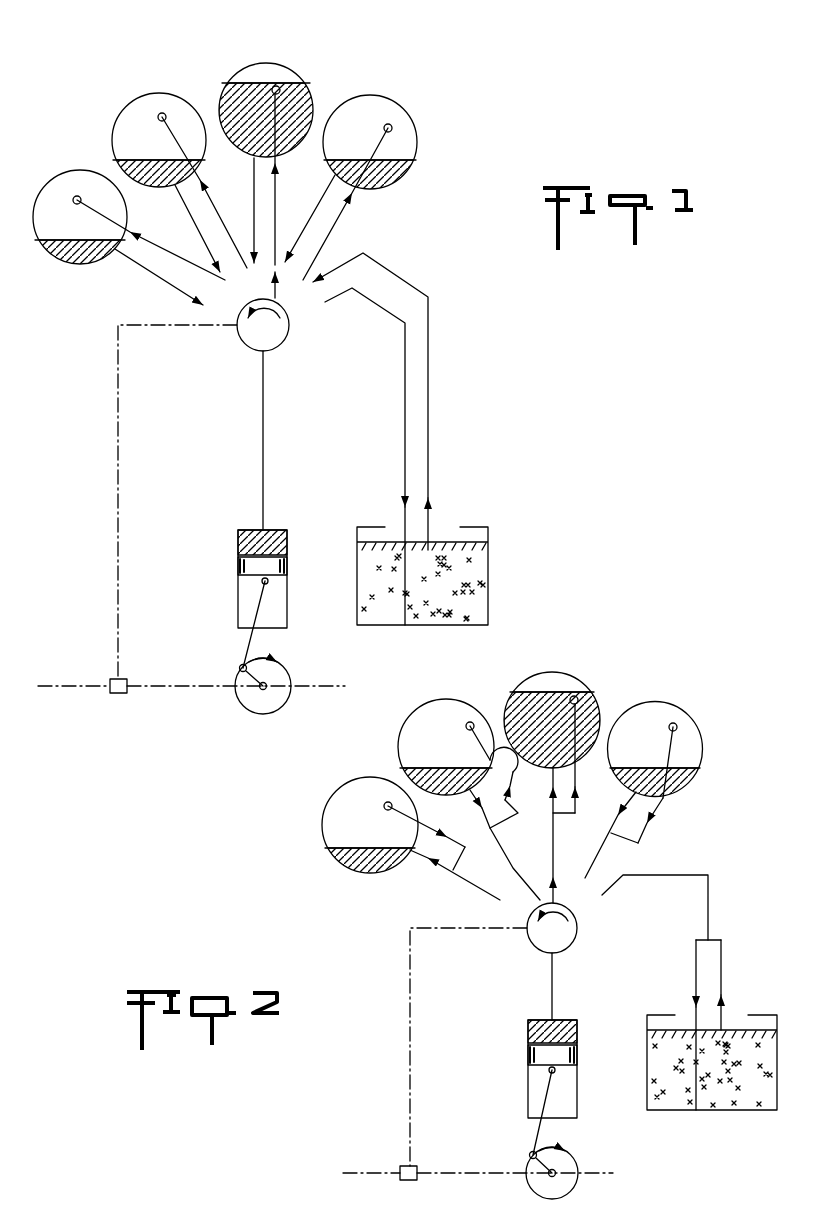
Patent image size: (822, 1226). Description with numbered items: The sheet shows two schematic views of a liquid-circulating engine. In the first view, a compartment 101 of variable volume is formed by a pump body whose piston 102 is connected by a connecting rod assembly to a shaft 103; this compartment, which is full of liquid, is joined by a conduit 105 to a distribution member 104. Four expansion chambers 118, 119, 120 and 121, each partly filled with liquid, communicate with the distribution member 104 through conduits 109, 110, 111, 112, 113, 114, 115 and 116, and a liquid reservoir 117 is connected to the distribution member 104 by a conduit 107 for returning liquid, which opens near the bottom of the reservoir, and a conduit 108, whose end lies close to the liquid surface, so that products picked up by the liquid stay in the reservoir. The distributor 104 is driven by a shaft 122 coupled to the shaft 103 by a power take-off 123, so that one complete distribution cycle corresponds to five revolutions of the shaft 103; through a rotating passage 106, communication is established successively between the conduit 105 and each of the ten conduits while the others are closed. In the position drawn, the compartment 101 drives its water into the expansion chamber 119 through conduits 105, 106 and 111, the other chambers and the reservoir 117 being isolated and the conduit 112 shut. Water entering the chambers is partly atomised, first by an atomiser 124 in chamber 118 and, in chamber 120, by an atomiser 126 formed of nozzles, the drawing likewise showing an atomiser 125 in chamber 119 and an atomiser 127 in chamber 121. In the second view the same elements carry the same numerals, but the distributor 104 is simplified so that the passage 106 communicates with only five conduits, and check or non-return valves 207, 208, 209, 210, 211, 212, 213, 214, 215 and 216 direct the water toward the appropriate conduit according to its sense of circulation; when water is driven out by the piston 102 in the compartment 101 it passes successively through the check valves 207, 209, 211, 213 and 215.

In FIG. 1, the compartment of variable volume 101 is at (284, 550).
In FIG. 2, the compartment of variable volume 101 is at (526, 1036).
In FIG. 1, the piston 102 is at (282, 570).
In FIG. 2, the piston 102 is at (530, 1057).
In FIG. 1, the shaft 103 is at (182, 686).
In FIG. 2, the shaft 103 is at (460, 1172).
In FIG. 1, the distribution member 104 is at (246, 345).
In FIG. 2, the distribution member 104 is at (572, 938).
In FIG. 1, the conduit 105 is at (270, 434).
In FIG. 2, the conduit 105 is at (556, 994).
In FIG. 1, the rotating passage 106 is at (272, 292).
In FIG. 2, the rotating passage 106 is at (551, 900).
In FIG. 1, the conduit 107 is at (333, 310).
In FIG. 2, the conduit 107 is at (604, 906).
In FIG. 1, the conduit 108 is at (350, 292).
In FIG. 1, the conduit 109 is at (326, 246).
In FIG. 2, the conduit 109 is at (592, 868).
In FIG. 1, the conduit 110 is at (342, 222).
In FIG. 1, the conduit 111 is at (262, 222).
In FIG. 2, the conduit 111 is at (556, 864).
In FIG. 1, the conduit 112 is at (272, 186).
In FIG. 1, the conduit 113 is at (205, 218).
In FIG. 2, the conduit 113 is at (507, 870).
In FIG. 1, the conduit 114 is at (196, 191).
In FIG. 1, the conduit 115 is at (164, 252).
In FIG. 2, the conduit 115 is at (482, 897).
In FIG. 1, the conduit 116 is at (146, 275).
In FIG. 1, the liquid reservoir 117 is at (478, 526).
In FIG. 2, the liquid reservoir 117 is at (650, 1025).
In FIG. 1, the expansion chamber 118 is at (418, 150).
In FIG. 2, the expansion chamber 118 is at (703, 740).
In FIG. 1, the expansion chamber 119 is at (306, 92).
In FIG. 2, the expansion chamber 119 is at (570, 672).
In FIG. 1, the expansion chamber 120 is at (192, 104).
In FIG. 2, the expansion chamber 120 is at (406, 732).
In FIG. 1, the expansion chamber 121 is at (68, 176).
In FIG. 2, the expansion chamber 121 is at (344, 782).
In FIG. 1, the shaft 122 is at (114, 483).
In FIG. 2, the shaft 122 is at (406, 1026).
In FIG. 1, the power take-off 123 is at (110, 680).
In FIG. 2, the power take-off 123 is at (410, 1170).
In FIG. 1, the atomiser 124 is at (392, 126).
In FIG. 2, the atomiser 124 is at (677, 724).
In FIG. 1, the atomiser 125 is at (280, 86).
In FIG. 2, the atomiser 125 is at (578, 698).
In FIG. 1, the atomiser 126 is at (161, 113).
In FIG. 2, the atomiser 126 is at (473, 722).
In FIG. 1, the atomiser 127 is at (73, 204).
In FIG. 2, the atomiser 127 is at (385, 810).
In FIG. 2, the check valve 207 is at (692, 1000).
In FIG. 2, the check valve 208 is at (728, 1002).
In FIG. 2, the check valve 209 is at (656, 822).
In FIG. 2, the check valve 210 is at (640, 810).
In FIG. 2, the check valve 211 is at (593, 770).
In FIG. 2, the check valve 212 is at (514, 812).
In FIG. 2, the check valve 213 is at (490, 760).
In FIG. 2, the check valve 214 is at (484, 826).
In FIG. 2, the check valve 215 is at (446, 832).
In FIG. 2, the check valve 216 is at (418, 866).